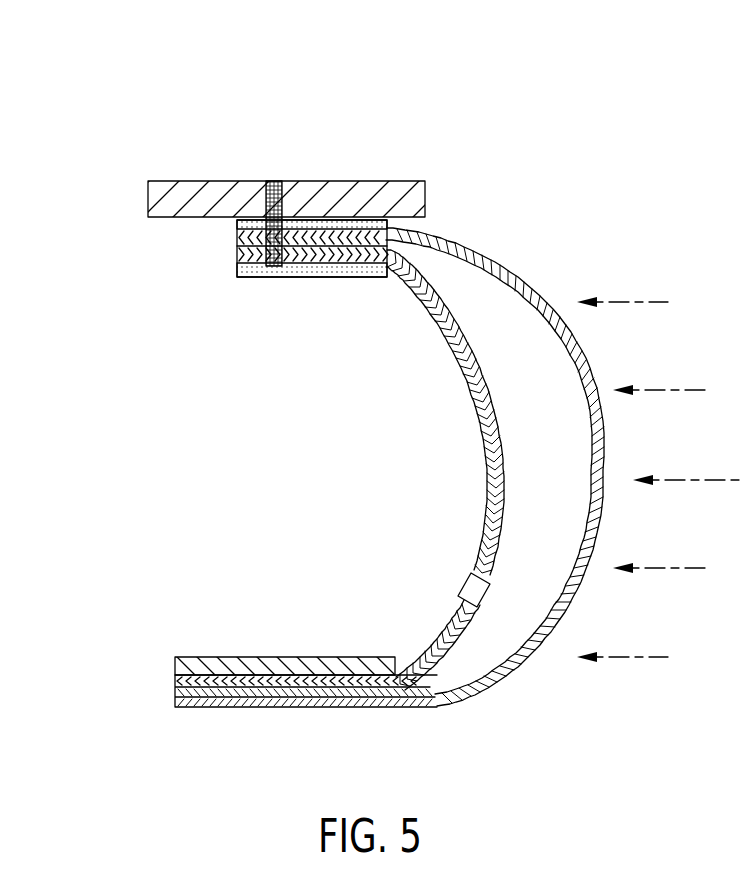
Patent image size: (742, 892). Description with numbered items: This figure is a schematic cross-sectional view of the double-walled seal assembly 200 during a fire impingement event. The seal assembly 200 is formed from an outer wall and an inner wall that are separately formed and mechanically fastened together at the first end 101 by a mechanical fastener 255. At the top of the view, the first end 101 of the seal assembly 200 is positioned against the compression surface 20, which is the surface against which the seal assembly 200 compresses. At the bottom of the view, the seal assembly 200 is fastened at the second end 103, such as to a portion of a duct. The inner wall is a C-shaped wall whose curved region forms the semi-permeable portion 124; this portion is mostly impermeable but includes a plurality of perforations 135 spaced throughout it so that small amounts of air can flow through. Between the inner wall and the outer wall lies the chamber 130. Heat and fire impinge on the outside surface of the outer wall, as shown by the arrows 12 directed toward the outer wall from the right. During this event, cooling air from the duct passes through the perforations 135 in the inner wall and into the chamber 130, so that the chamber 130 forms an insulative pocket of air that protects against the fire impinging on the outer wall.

The seal assembly 200 is at (124, 99).
The compression surface 20 is at (338, 193).
The first end 101 is at (452, 156).
The mechanical fastener 255 is at (268, 185).
The chamber 130 is at (540, 380).
The semi-permeable portion 124 is at (476, 475).
The perforations 135 is at (452, 591).
The second end 103 is at (141, 740).
The arrows 12 is at (640, 695).